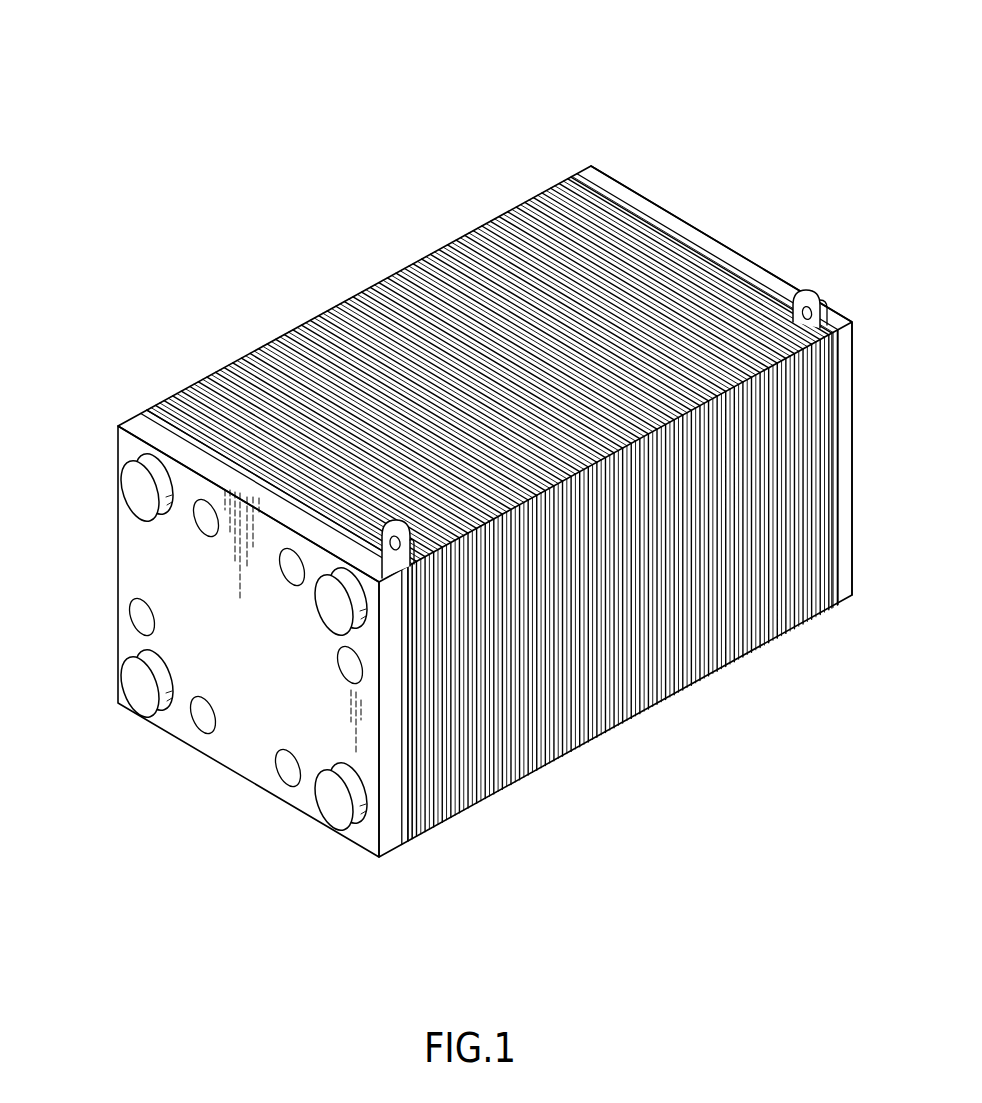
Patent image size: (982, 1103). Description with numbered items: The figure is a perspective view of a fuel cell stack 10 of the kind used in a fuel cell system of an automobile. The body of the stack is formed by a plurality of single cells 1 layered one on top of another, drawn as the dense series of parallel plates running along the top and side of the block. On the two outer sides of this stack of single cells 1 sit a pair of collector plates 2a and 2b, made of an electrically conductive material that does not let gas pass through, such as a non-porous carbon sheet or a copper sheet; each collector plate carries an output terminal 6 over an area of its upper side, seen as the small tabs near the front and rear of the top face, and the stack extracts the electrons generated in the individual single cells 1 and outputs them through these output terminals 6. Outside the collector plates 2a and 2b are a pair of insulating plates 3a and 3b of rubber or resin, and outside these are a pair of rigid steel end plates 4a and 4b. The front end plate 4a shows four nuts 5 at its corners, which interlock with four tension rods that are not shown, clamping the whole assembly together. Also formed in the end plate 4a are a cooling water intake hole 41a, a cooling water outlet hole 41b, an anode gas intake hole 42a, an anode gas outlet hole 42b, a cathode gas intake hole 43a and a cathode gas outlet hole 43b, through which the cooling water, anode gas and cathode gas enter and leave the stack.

The fuel cell stack 10 is at (551, 96).
The single cells 1 is at (627, 708).
The collector plate 2a is at (410, 833).
The collector plate 2b is at (822, 617).
The insulating plate 3a is at (404, 837).
The insulating plate 3b is at (830, 610).
The end plate 4a is at (387, 840).
The end plate 4b is at (844, 594).
The nuts 5 is at (140, 494).
The output terminal 6 is at (395, 522).
The cooling water intake hole 41a is at (288, 770).
The cooling water outlet hole 41b is at (205, 518).
The anode gas intake hole 42a is at (292, 568).
The anode gas outlet hole 42b is at (202, 716).
The cathode gas intake hole 43a is at (140, 617).
The cathode gas outlet hole 43b is at (349, 667).